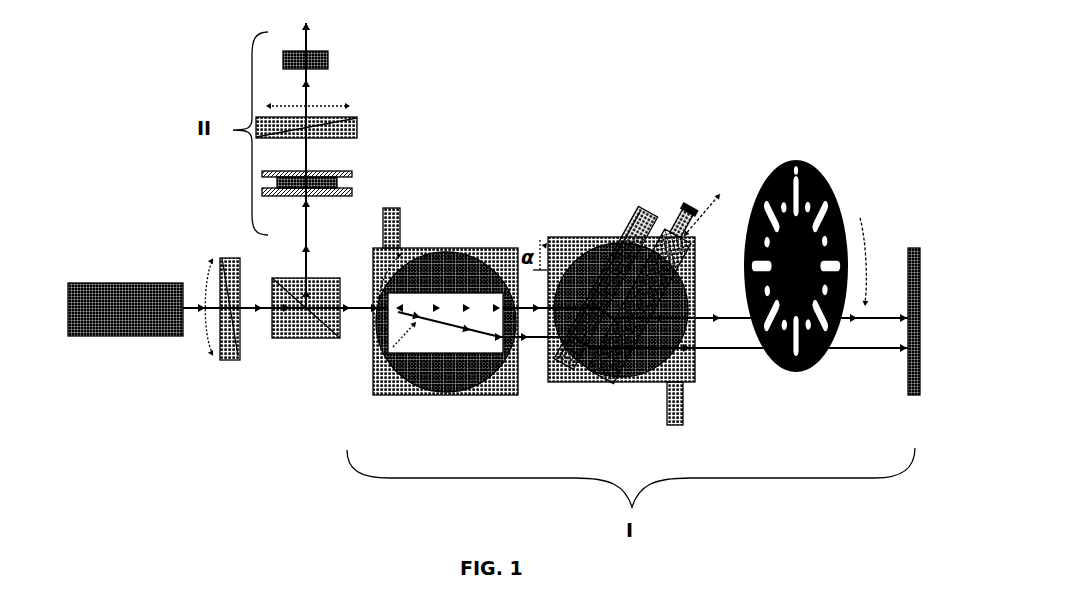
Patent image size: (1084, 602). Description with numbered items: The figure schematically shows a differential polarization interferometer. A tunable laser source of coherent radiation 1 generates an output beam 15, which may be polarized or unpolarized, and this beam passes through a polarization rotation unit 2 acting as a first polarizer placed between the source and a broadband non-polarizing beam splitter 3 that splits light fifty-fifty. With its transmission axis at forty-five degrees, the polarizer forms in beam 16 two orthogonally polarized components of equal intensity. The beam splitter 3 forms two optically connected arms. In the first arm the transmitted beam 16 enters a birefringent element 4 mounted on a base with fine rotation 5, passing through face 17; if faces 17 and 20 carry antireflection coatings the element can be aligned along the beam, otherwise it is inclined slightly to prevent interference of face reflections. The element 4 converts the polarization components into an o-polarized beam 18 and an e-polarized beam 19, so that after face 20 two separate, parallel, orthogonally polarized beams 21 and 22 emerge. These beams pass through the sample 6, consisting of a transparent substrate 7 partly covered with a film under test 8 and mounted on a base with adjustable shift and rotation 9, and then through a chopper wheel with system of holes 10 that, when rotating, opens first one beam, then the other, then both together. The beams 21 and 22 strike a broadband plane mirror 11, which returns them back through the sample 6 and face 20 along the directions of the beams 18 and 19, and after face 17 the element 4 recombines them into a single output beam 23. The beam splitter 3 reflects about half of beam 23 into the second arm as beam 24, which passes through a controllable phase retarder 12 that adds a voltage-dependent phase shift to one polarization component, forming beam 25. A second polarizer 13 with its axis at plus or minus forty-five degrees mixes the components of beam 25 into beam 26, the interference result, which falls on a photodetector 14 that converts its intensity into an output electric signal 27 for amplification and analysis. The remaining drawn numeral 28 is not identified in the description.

The tunable laser source of coherent radiation 1 is at (125, 336).
The polarization rotation unit 2 is at (223, 360).
The broadband non-polarizing beam splitter 3 is at (313, 340).
The birefringent element 4 is at (428, 386).
The base with fine rotation 5 is at (470, 394).
The sample 6 is at (616, 233).
The transparent substrate 7 is at (560, 377).
The film under test 8 is at (596, 238).
The base with adjustable shift and rotation 9 is at (618, 381).
The chopper wheel with system of holes 10 is at (772, 168).
The broadband plane mirror 11 is at (912, 398).
The controllable phase retarder 12 is at (342, 173).
The second polarizer 13 is at (340, 118).
The photodetector 14 is at (326, 65).
The output beam 15 is at (193, 303).
The beam 16 is at (262, 312).
The face 17 is at (372, 350).
The o-polarized beam 18 is at (440, 300).
The e-polarized beam 19 is at (466, 300).
The face 20 is at (522, 392).
The beam 21 is at (526, 336).
The beam 22 is at (530, 300).
The output beam 23 is at (327, 300).
The beam 24 is at (310, 221).
The beam 25 is at (312, 147).
The beam 26 is at (306, 96).
The output electric signal 27 is at (308, 36).
The reflected beam in crystal 28 is at (392, 377).